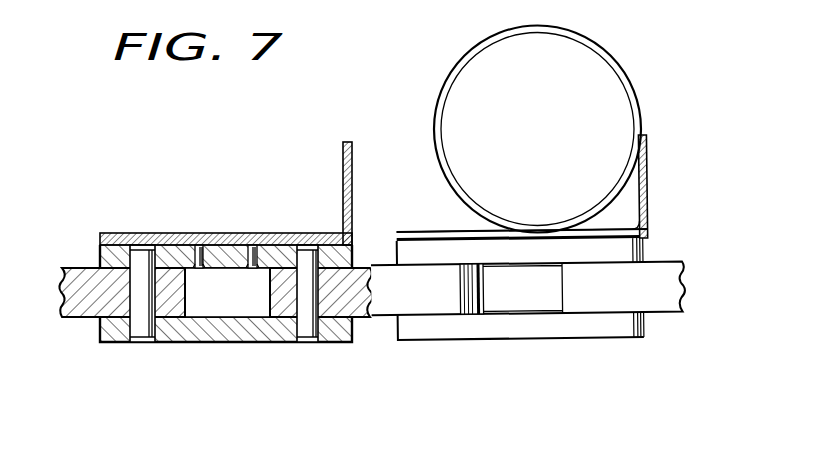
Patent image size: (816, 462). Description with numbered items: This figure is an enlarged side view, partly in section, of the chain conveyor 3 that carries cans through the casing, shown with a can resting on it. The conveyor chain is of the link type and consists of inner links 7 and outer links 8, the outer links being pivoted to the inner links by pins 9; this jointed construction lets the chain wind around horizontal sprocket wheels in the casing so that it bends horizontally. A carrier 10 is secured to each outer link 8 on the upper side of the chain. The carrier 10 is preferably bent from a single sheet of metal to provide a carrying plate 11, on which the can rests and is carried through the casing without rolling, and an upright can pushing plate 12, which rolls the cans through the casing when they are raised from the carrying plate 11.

The chain conveyor 3 is at (337, 343).
The inner links 7 is at (90, 300).
The outer links 8 is at (217, 272).
The pins 9 is at (140, 300).
The carrier 10 is at (650, 171).
The carrying plate 11 is at (173, 233).
The can pushing plate 12 is at (343, 180).